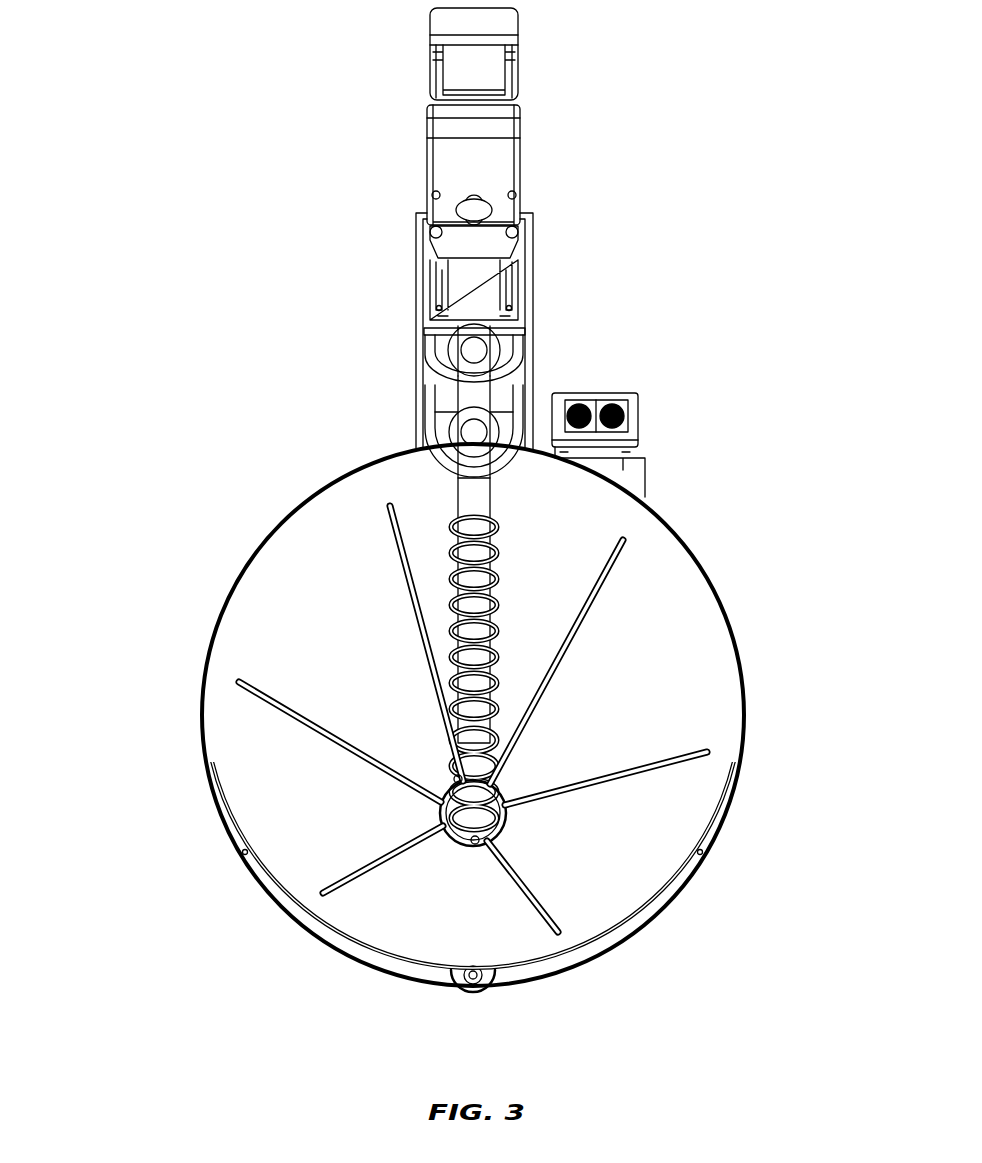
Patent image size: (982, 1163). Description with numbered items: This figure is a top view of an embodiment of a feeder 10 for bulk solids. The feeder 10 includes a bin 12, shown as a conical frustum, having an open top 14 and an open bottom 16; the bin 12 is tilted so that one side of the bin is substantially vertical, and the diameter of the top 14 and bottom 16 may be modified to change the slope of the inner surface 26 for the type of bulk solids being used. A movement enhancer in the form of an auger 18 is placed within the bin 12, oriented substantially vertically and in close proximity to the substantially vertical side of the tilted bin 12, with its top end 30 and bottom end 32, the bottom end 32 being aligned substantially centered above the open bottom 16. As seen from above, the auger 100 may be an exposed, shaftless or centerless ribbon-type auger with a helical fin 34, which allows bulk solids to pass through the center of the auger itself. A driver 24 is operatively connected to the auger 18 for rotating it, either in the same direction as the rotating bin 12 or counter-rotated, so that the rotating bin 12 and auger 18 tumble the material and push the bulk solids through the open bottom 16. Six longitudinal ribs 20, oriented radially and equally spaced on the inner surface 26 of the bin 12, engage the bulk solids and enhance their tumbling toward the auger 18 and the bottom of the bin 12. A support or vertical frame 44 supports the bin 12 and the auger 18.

The feeder 10 is at (677, 106).
The bin 12 is at (687, 540).
The open top 14 is at (678, 615).
The open bottom 16 is at (472, 842).
The auger 18 is at (470, 633).
The longitudinal rib 20 is at (668, 752).
The driver 24 is at (480, 297).
The inner surface 26 is at (600, 870).
The top end 30 is at (468, 508).
The bottom end 32 is at (442, 808).
The helical fin 34 is at (462, 695).
The vertical frame 44 is at (465, 162).
The auger 100 is at (455, 779).